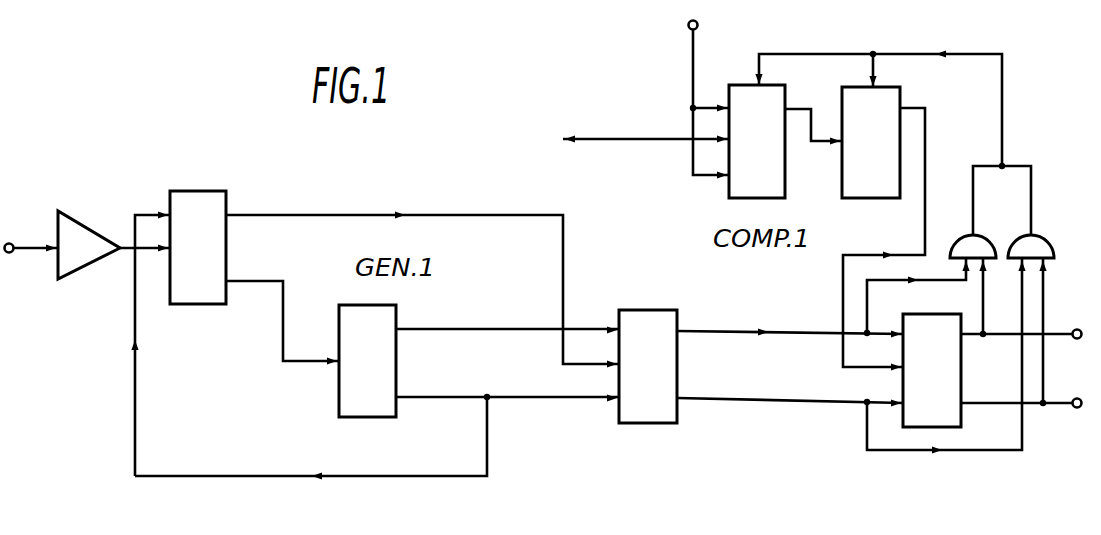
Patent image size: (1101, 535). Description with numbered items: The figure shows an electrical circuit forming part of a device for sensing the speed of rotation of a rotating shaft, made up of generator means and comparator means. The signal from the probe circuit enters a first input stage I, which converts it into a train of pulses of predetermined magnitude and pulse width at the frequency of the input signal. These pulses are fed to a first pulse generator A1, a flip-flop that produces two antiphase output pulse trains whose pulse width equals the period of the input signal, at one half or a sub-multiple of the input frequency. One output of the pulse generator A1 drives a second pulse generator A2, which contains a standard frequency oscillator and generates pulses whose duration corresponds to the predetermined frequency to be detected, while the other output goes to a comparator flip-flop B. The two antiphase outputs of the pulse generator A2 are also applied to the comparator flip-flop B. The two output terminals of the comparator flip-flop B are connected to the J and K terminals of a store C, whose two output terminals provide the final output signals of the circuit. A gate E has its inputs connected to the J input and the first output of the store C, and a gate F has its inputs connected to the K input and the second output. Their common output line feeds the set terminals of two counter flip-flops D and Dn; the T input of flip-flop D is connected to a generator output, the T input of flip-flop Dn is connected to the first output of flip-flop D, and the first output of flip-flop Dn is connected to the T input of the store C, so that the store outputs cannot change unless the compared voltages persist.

The first input stage I is at (89, 245).
The first pulse generator A1 is at (198, 247).
The second pulse generator A2 is at (367, 361).
The comparator flip-flop B is at (648, 366).
The store C is at (932, 370).
The counter flip-flop D is at (757, 141).
The counter flip-flop Dn is at (871, 142).
The gate E is at (973, 247).
The gate F is at (1031, 247).